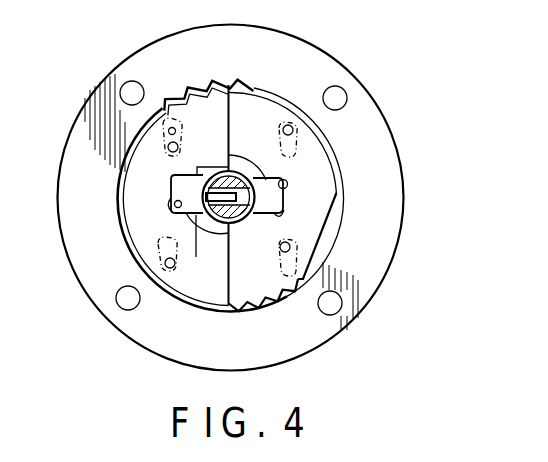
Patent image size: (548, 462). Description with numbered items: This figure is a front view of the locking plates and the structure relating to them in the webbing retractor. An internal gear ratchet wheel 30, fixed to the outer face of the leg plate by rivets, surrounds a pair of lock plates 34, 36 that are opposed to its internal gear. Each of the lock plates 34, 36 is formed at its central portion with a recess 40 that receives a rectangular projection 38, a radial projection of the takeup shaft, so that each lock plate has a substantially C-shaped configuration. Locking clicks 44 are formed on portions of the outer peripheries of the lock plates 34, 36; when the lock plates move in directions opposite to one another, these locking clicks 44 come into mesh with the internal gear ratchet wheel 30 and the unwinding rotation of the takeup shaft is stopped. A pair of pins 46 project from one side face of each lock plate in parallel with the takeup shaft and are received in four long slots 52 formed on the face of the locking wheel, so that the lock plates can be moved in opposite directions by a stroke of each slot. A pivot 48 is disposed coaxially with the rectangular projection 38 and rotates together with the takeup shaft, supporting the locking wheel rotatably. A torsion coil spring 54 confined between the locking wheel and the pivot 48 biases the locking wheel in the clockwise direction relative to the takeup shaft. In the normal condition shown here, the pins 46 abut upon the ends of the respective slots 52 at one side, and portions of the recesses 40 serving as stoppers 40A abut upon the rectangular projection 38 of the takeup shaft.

The internal gear ratchet wheel 30 is at (312, 46).
The lock plate 34 is at (125, 204).
The lock plate 36 is at (322, 171).
The rectangular projection 38 is at (171, 190).
The recess 40 is at (171, 207).
The stopper 40A is at (261, 227).
The locking click 44 is at (223, 83).
The pin 46 is at (178, 144).
The pivot 48 is at (240, 163).
The long slot 52 is at (159, 112).
The torsion coil spring 54 is at (206, 167).